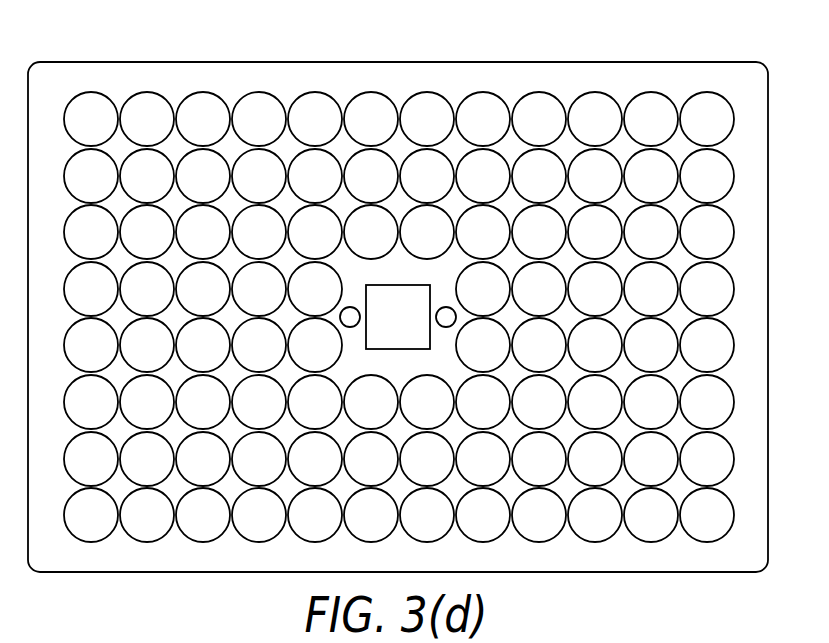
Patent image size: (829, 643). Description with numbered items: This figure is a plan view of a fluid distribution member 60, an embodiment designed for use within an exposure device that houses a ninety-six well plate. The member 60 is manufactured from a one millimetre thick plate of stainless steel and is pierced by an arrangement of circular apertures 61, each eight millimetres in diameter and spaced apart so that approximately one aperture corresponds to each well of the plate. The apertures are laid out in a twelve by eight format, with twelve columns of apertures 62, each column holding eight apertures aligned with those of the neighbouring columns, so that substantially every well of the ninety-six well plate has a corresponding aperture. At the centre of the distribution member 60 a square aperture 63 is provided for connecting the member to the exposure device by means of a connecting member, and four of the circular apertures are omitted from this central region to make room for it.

The fluid distribution member 60 is at (62, 84).
The circular apertures 61 is at (259, 110).
The columns of apertures 62 is at (595, 58).
The square aperture 63 is at (394, 300).